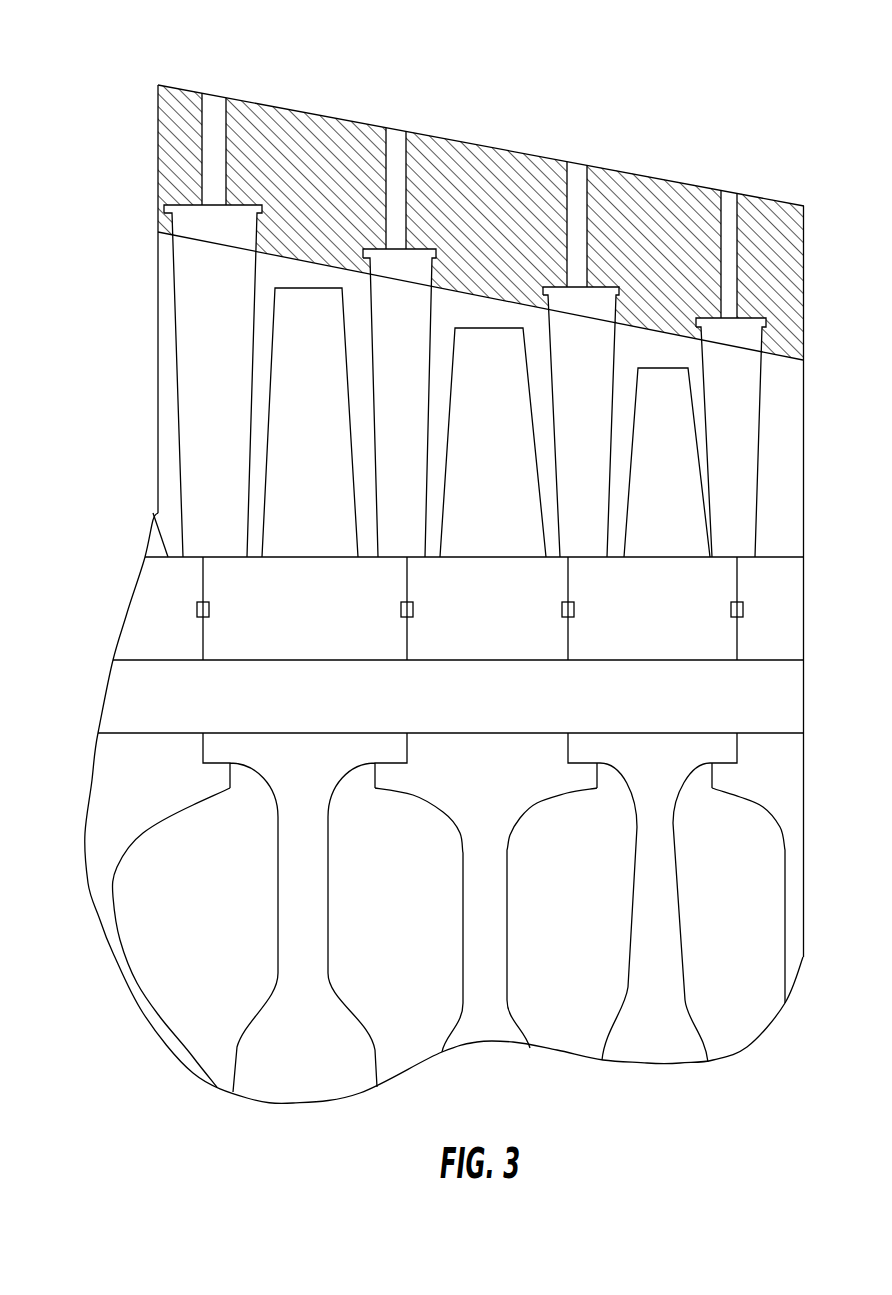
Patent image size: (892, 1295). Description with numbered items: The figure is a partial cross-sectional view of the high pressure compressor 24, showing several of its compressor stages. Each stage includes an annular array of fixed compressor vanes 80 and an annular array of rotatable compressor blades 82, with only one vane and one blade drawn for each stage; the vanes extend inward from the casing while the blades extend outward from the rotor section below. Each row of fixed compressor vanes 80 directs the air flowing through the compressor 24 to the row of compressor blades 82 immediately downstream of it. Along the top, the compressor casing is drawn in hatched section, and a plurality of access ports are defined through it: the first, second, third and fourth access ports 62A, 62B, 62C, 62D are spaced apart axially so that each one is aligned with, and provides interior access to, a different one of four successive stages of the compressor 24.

The high pressure compressor 24 is at (88, 146).
The first access port 62A is at (177, 80).
The second access port 62B is at (362, 112).
The third access port 62C is at (547, 145).
The fourth access port 62D is at (697, 175).
The fixed compressor vanes 80 is at (199, 380).
The rotatable compressor blades 82 is at (296, 409).